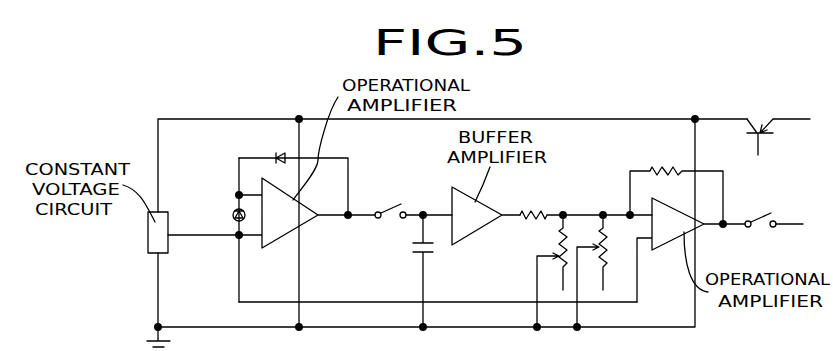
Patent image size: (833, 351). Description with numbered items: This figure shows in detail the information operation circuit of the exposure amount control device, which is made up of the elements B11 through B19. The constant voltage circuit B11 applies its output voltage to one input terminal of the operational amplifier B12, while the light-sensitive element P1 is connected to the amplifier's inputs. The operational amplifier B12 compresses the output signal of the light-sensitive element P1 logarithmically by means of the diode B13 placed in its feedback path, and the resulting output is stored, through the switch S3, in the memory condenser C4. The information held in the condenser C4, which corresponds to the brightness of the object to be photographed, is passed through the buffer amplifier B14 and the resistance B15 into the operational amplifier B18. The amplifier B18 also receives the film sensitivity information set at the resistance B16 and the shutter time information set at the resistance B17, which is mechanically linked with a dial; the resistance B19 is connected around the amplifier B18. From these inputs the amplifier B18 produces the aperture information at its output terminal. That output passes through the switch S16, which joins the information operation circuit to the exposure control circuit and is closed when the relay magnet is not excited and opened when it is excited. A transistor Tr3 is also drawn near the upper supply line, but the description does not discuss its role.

The constant voltage circuit B11 is at (182, 232).
The light-sensitive element P1 is at (229, 230).
The operational amplifier B12 is at (290, 228).
The diode B13 is at (295, 171).
The switch S3 is at (413, 226).
The memory condenser C4 is at (413, 247).
The buffer amplifier B14 is at (478, 228).
The resistance B15 is at (586, 201).
The resistance B16 is at (556, 247).
The resistance B17 is at (590, 271).
The operational amplifier B18 is at (681, 235).
The element of operation circuit B19 is at (676, 183).
The switch S16 is at (774, 234).
The transistor Tr3 is at (760, 143).